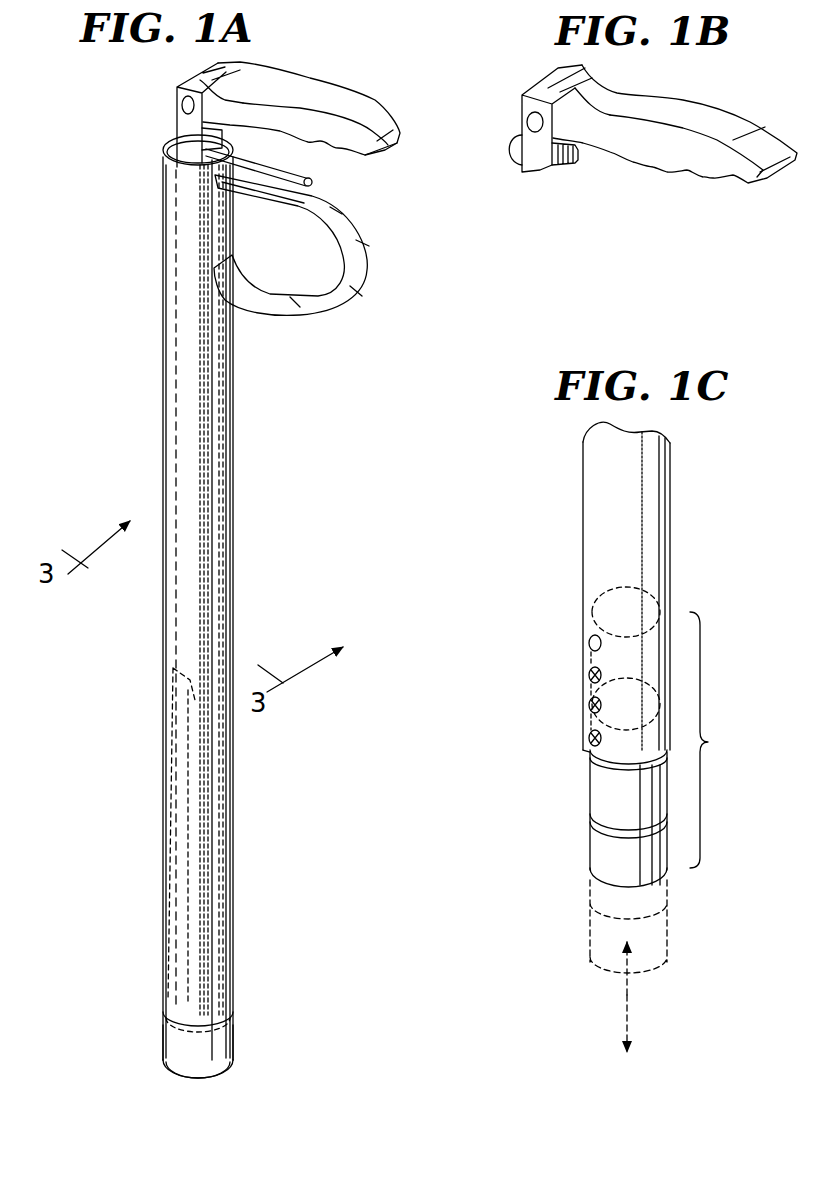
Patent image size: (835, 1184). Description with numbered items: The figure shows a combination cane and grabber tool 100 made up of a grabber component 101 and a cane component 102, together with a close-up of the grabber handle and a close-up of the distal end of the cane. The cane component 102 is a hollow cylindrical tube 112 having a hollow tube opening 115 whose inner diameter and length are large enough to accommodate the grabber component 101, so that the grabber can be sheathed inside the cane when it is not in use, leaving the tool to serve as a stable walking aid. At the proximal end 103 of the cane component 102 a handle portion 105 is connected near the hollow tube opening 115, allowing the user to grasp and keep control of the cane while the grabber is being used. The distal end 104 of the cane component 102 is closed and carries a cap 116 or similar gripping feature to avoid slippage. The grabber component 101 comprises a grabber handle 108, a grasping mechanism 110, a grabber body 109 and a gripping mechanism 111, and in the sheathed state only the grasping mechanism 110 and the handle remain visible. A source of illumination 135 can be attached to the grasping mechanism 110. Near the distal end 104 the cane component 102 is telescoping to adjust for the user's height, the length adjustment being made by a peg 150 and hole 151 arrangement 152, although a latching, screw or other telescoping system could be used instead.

In FIG. 1A, the combination cane and grabber tool 100 is at (116, 113).
In FIG. 1A, the grabber component 101 is at (396, 140).
In FIG. 1A, the cane component 102 is at (158, 330).
In FIG. 1A, the proximal end 103 is at (324, 195).
In FIG. 1A, the distal end 104 is at (198, 1078).
In FIG. 1C, the distal end 104 is at (629, 896).
In FIG. 1A, the handle portion 105 is at (380, 265).
In FIG. 1A, the grabber handle 108 is at (316, 84).
In FIG. 1B, the grabber handle 108 is at (718, 103).
In FIG. 1A, the grabber body 109 is at (196, 410).
In FIG. 1A, the grasping mechanism 110 is at (324, 183).
In FIG. 1A, the gripping mechanism 111 is at (186, 1000).
In FIG. 1A, the hollow cylindrical tube 112 is at (238, 487).
In FIG. 1C, the hollow cylindrical tube 112 is at (694, 518).
In FIG. 1A, the hollow tube opening 115 is at (176, 168).
In FIG. 1A, the cap 116 is at (236, 1035).
In FIG. 1C, the cap 116 is at (588, 838).
In FIG. 1B, the source of illumination 135 is at (511, 147).
In FIG. 1C, the peg 150 is at (588, 650).
In FIG. 1C, the hole 151 is at (588, 739).
In FIG. 1C, the peg and hole arrangement 152 is at (725, 740).